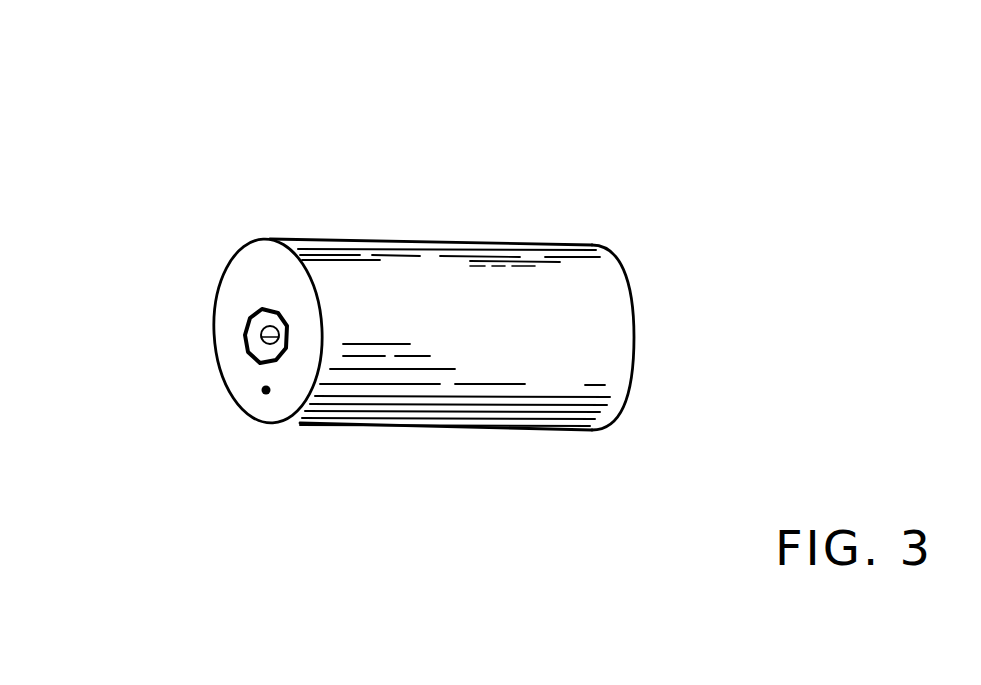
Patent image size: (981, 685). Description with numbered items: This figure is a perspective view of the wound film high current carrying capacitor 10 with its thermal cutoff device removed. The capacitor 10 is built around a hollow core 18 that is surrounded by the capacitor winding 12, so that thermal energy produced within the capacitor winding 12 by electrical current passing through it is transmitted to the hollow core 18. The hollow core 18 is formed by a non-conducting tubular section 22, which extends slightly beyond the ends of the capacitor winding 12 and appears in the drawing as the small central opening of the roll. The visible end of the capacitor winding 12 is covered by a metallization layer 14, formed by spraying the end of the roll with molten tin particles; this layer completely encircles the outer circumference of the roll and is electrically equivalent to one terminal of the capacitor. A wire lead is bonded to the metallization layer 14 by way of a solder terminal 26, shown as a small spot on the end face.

The high current carrying capacitor 10 is at (468, 59).
The capacitor winding 12 is at (593, 292).
The metallization layer 14 is at (261, 287).
The hollow core 18 is at (272, 340).
The non-conducting tubular section 22 is at (258, 316).
The solder terminal 26 is at (263, 397).